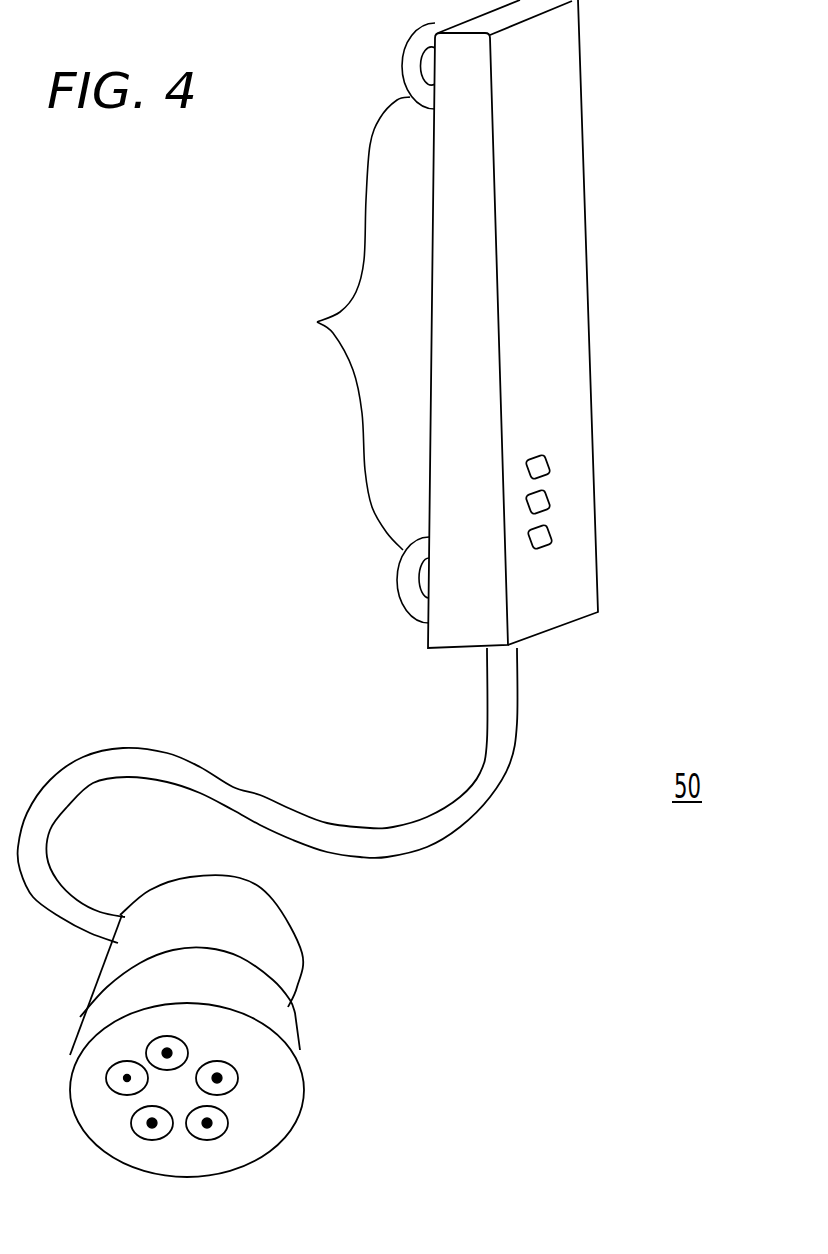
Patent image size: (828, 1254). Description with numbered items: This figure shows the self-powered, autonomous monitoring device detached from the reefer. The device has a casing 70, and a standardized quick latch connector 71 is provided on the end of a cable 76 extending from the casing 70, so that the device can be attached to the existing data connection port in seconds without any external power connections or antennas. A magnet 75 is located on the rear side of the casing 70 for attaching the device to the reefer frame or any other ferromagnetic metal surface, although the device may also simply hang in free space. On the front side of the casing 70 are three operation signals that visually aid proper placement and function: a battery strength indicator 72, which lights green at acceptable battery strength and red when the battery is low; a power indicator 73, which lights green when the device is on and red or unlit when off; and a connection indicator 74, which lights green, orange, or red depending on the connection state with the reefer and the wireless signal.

The device casing 70 is at (573, 185).
The quick latch connector 71 is at (291, 1080).
The battery strength indicator 72 is at (549, 466).
The power indicator 73 is at (549, 500).
The connection indicator 74 is at (551, 536).
The magnet 75 is at (358, 323).
The cable 76 is at (442, 843).